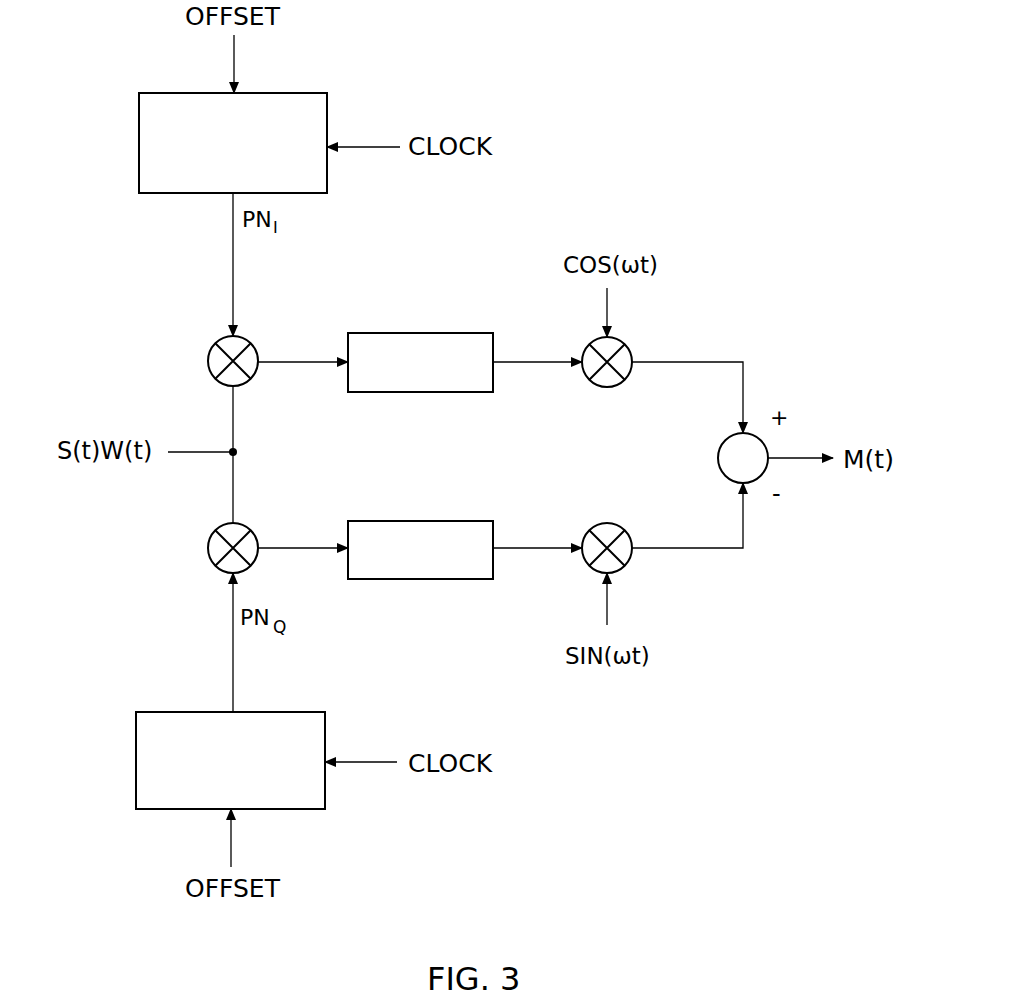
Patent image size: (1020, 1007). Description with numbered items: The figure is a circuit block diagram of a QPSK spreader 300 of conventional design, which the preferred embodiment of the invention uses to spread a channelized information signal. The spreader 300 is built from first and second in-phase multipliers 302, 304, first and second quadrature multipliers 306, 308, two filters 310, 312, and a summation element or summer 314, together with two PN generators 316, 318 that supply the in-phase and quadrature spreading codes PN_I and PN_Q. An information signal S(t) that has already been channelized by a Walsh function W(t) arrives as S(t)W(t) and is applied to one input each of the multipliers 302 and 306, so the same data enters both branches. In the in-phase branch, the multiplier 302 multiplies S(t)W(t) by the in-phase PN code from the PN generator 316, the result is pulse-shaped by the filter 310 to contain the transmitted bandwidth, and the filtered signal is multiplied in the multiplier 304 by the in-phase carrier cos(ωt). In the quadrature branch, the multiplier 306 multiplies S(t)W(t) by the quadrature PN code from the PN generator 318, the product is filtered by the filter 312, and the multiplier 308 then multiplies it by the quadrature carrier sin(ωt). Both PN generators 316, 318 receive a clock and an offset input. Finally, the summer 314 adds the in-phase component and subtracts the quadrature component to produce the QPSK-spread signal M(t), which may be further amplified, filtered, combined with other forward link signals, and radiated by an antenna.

The QPSK spreader 300 is at (782, 818).
The first in-phase multiplier 302 is at (215, 343).
The second in-phase multiplier 304 is at (600, 385).
The first quadrature multiplier 306 is at (215, 566).
The second quadrature multiplier 308 is at (600, 525).
The filter 310 is at (427, 333).
The filter 312 is at (430, 579).
The summer 314 is at (726, 441).
The PN generator 316 is at (278, 93).
The PN generator 318 is at (275, 809).